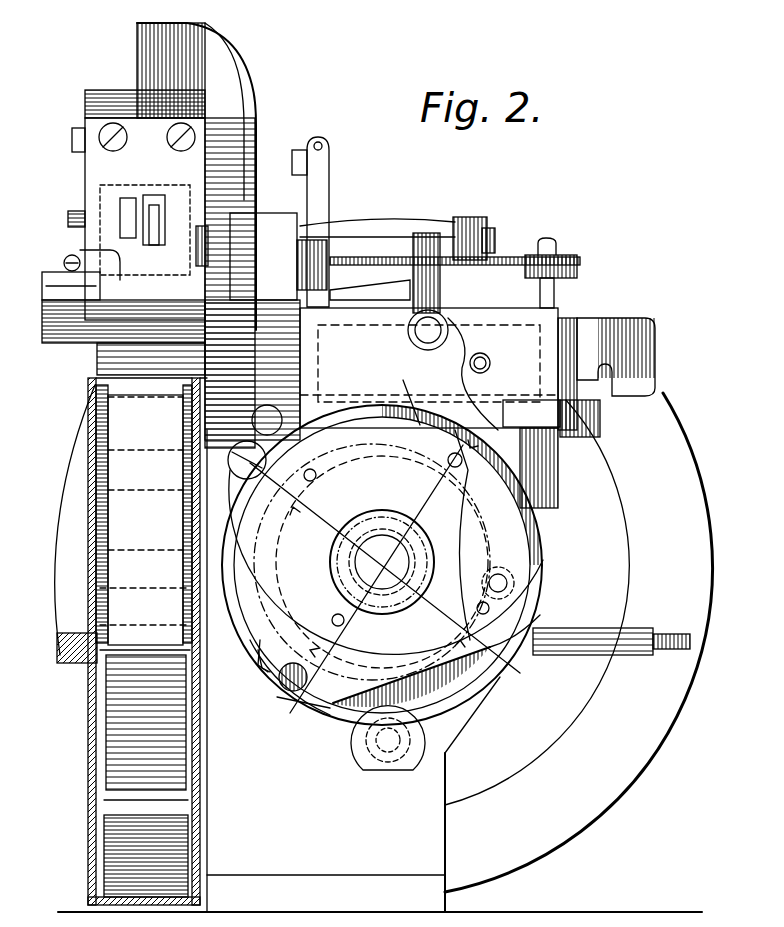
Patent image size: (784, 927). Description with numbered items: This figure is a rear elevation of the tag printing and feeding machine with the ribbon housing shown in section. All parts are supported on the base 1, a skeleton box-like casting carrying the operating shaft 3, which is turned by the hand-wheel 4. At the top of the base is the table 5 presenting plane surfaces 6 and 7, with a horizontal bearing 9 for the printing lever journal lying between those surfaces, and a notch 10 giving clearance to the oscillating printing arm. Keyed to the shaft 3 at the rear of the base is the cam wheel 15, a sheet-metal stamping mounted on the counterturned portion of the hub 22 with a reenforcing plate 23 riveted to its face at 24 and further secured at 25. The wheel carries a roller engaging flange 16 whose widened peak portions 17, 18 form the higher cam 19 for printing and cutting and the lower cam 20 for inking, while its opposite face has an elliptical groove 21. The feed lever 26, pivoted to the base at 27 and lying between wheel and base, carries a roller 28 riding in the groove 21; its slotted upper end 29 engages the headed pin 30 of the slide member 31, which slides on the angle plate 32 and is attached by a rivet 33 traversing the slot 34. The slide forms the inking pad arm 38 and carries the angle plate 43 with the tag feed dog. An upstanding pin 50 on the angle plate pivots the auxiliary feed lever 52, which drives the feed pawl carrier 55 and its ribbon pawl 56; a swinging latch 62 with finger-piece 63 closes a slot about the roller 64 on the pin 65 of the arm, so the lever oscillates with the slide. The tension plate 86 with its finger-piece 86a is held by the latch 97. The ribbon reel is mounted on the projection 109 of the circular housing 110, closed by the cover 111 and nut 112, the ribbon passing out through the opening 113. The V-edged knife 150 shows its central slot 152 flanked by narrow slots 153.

The base 1 is at (437, 780).
The operating shaft 3 is at (388, 560).
The hand-wheel 4 is at (700, 570).
The table portion 5 is at (318, 352).
The plane surface 6 is at (50, 305).
The plane surface 7 is at (312, 330).
The horizontal bearing 9 is at (296, 252).
The notch 10 is at (205, 322).
The cam wheel 15 is at (462, 430).
The roller engaging flange 16 is at (310, 490).
The peak portion 17 is at (280, 692).
The peak portion 18 is at (465, 468).
The cam 19 is at (260, 660).
The cam 20 is at (440, 428).
The elliptical groove 21 is at (372, 458).
The hub 22 is at (392, 520).
The reenforcing plate 23 is at (372, 562).
The rivets 24 is at (314, 472).
The attachment 25 is at (308, 680).
The feed lever 26 is at (470, 718).
The pivot 27 is at (366, 762).
The roller 28 is at (611, 641).
The slot 29 is at (455, 312).
The headed pin 30 is at (460, 333).
The slide member 31 is at (590, 345).
The angle plate 32 is at (594, 322).
The pin or rivet 33 is at (490, 368).
The slot 34 is at (392, 356).
The inking pad arm 38 is at (358, 305).
The angle plate 43 is at (558, 478).
The upstanding pin 50 is at (558, 282).
The auxiliary feed lever 52 is at (374, 268).
The feed pawl carrier 55 is at (160, 205).
The pawl 56 is at (135, 240).
The swinging latch 62 is at (360, 224).
The finger-piece 63 is at (460, 222).
The roller 64 is at (440, 240).
The pin 65 is at (414, 286).
The tension plate 86 is at (150, 300).
The finger-piece 86a is at (110, 262).
The latch 97 is at (92, 290).
The central horizontal projection 109 is at (92, 672).
The circular metal housing 110 is at (108, 816).
The cover 111 is at (90, 760).
The nut 112 is at (58, 640).
The opening 113 is at (97, 392).
The knife 150 is at (164, 235).
The central slot 152 is at (145, 225).
The narrow slots 153 is at (110, 244).